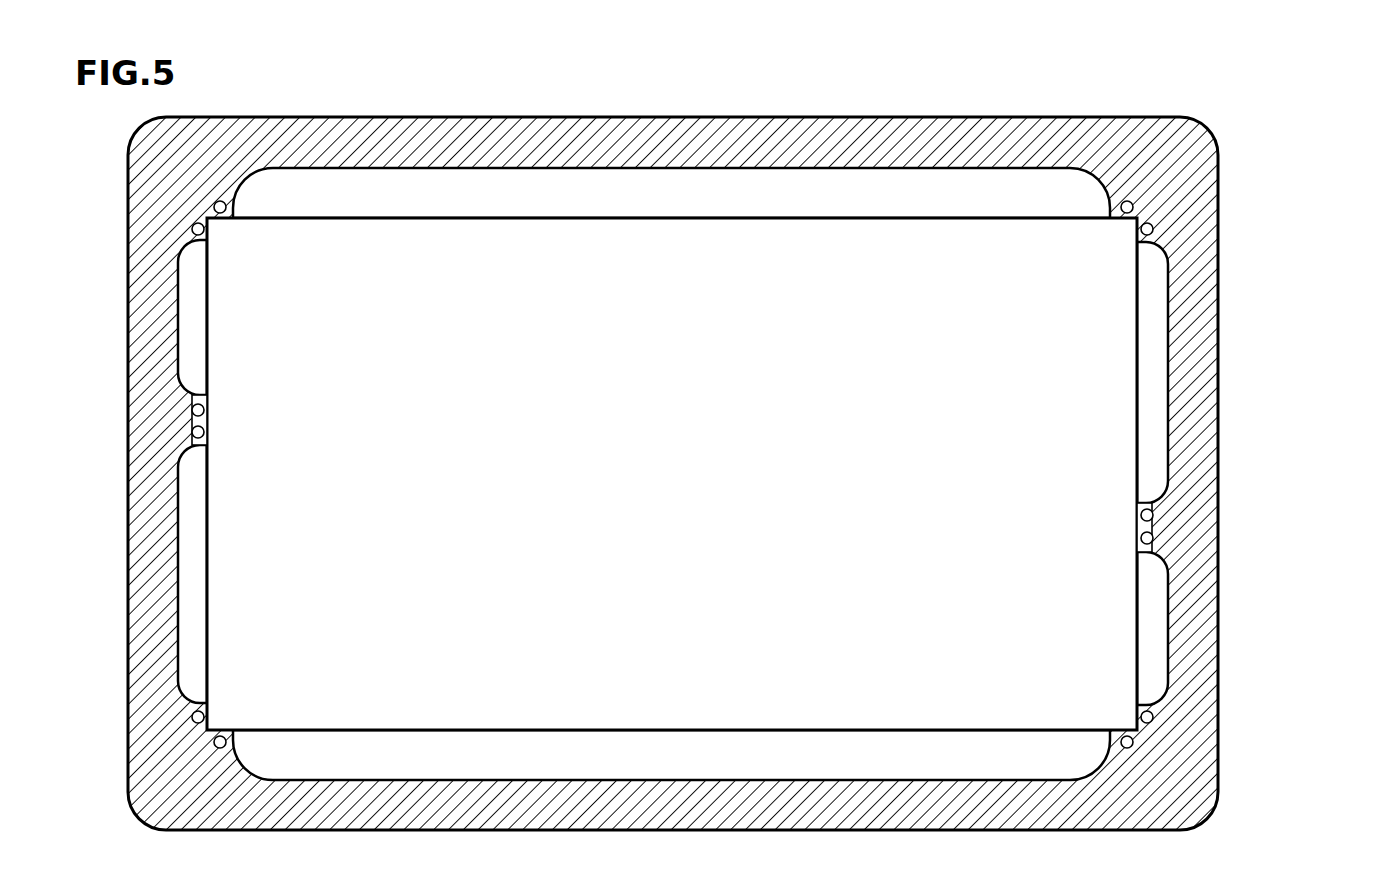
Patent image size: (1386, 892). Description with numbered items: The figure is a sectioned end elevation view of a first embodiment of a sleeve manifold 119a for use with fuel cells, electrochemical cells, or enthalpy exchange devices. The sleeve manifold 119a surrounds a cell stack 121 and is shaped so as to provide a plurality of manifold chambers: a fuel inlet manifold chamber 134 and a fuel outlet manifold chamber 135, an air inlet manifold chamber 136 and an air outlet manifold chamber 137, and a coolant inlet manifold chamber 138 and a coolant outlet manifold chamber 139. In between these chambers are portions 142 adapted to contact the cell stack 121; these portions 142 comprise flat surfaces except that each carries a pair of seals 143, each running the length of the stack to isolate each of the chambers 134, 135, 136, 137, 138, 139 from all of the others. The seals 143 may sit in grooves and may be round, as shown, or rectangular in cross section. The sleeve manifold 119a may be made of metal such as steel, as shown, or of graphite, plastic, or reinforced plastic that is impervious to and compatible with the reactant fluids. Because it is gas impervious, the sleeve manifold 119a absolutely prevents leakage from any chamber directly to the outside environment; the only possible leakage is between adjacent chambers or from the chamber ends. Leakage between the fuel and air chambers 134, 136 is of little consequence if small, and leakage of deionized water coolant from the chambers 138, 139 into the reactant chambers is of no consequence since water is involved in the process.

The sleeve manifold 119a is at (745, 451).
The cell stack 121 is at (712, 481).
The fuel inlet manifold chamber 134 is at (1150, 625).
The fuel outlet manifold chamber 135 is at (190, 312).
The air inlet manifold chamber 136 is at (712, 768).
The air outlet manifold chamber 137 is at (707, 206).
The coolant inlet manifold chamber 138 is at (1153, 363).
The coolant outlet manifold chamber 139 is at (187, 630).
The portions 142 is at (210, 219).
The seals 143 is at (1148, 503).